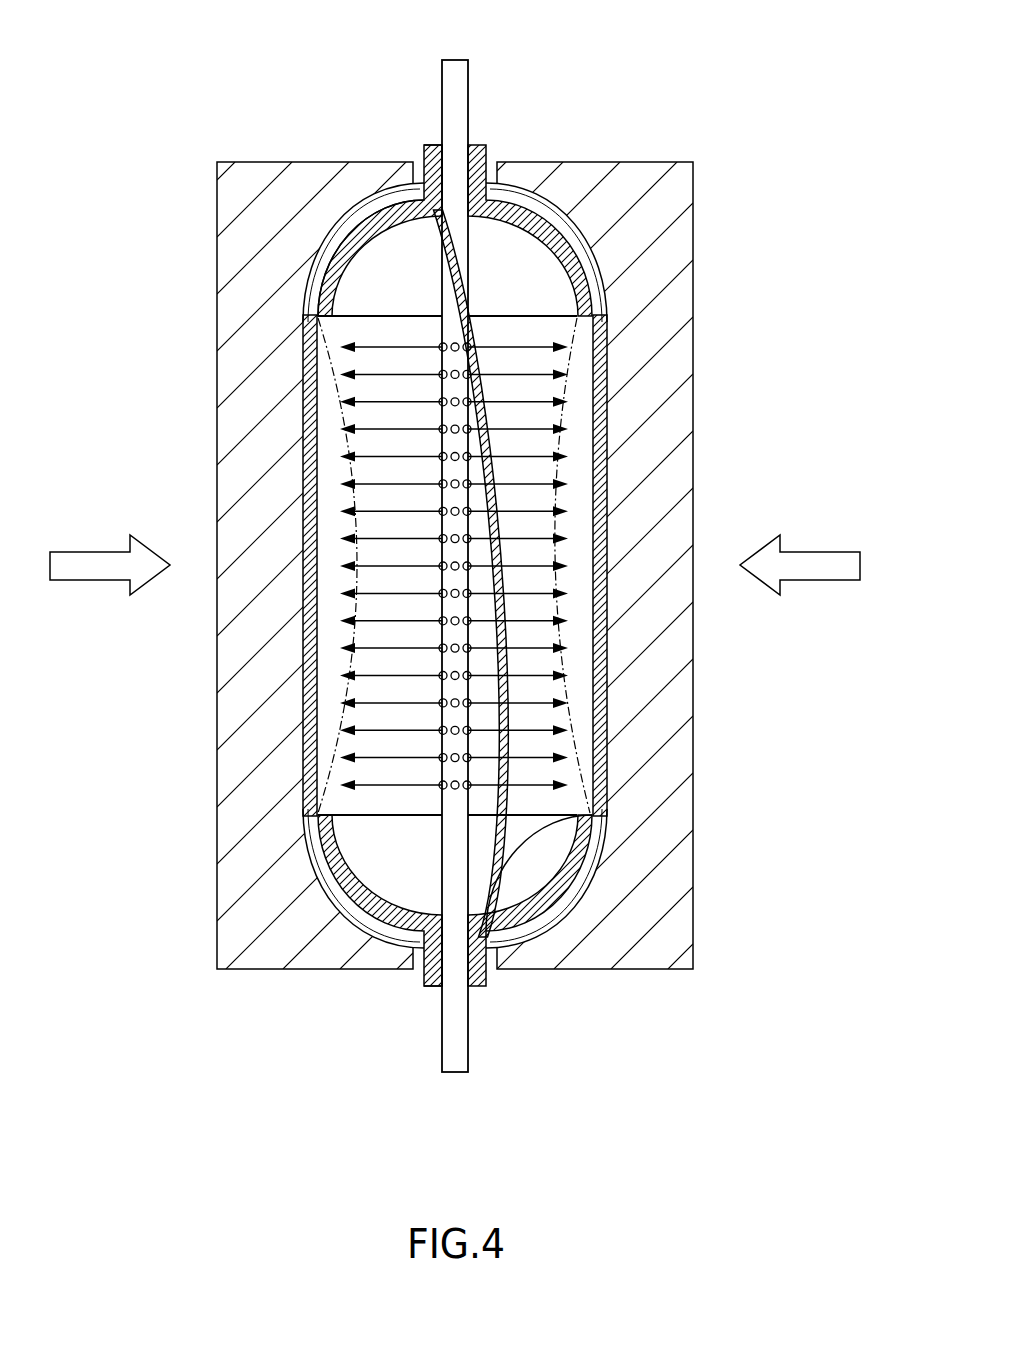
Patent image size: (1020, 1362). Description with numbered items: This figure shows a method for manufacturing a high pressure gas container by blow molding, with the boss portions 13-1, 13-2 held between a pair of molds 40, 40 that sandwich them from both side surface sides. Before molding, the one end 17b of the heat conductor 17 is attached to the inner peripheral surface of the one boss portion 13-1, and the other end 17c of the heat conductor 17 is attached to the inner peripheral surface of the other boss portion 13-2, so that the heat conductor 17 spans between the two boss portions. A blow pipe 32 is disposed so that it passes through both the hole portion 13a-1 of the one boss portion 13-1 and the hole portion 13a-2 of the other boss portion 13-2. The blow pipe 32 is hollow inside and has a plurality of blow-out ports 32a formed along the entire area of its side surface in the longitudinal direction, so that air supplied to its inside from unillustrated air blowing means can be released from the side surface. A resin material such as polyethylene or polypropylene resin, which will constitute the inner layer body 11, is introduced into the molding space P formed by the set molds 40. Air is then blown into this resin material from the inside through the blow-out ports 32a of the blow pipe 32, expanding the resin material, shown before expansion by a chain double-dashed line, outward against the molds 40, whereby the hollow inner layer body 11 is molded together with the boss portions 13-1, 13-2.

The inner layer body 11 is at (603, 493).
The one boss portion 13-1 is at (477, 143).
The other boss portion 13-2 is at (480, 990).
The hole portion of the one boss portion 13a-1 is at (441, 150).
The hole portion of the other boss portion 13a-2 is at (445, 995).
The heat conductor 17 is at (505, 630).
The one end of the heat conductor 17b is at (415, 203).
The other end of the heat conductor 17c is at (513, 943).
The blow pipe 32 is at (453, 812).
The blow-out ports 32a is at (453, 400).
The molds 40 is at (250, 725).
The molding space P is at (493, 173).